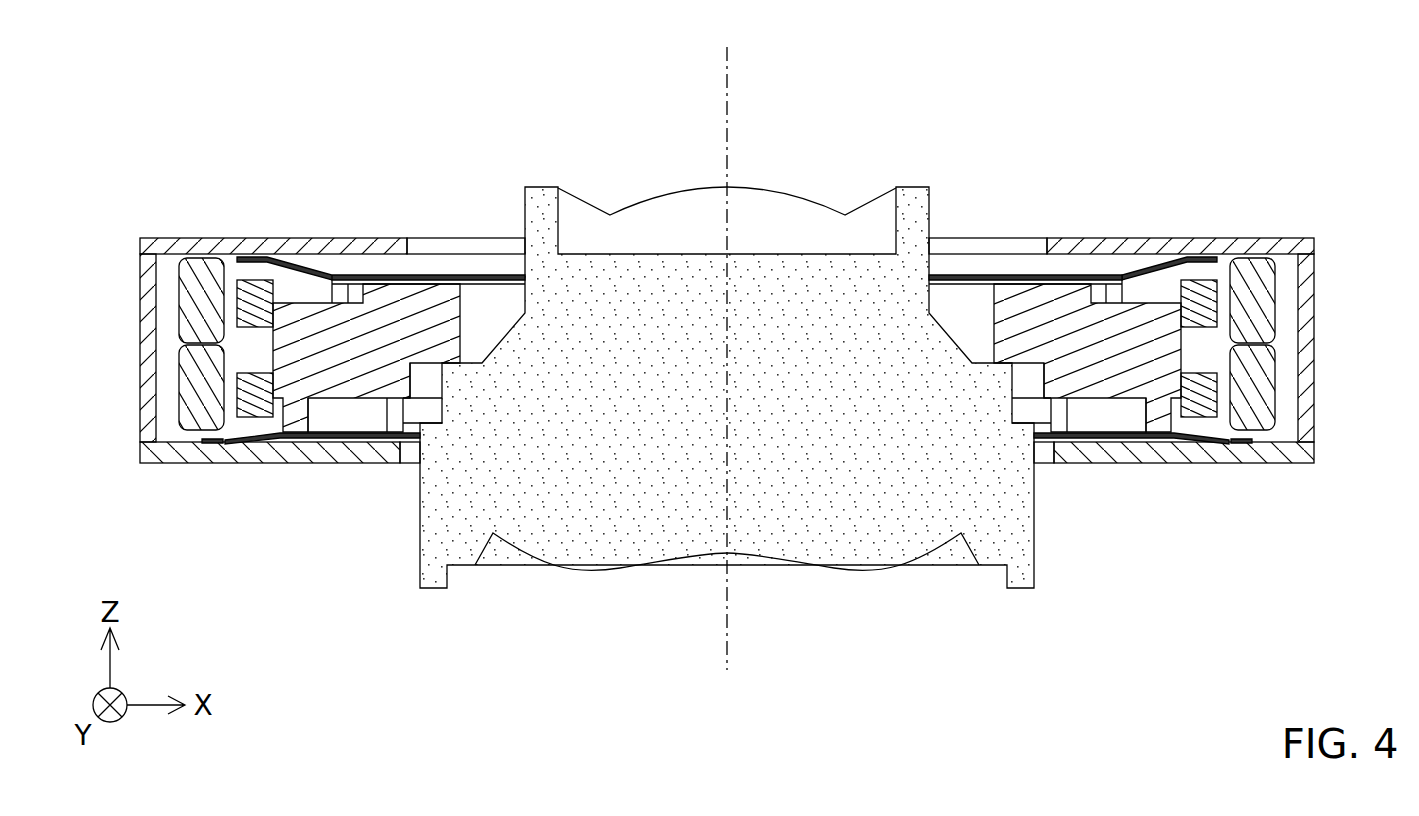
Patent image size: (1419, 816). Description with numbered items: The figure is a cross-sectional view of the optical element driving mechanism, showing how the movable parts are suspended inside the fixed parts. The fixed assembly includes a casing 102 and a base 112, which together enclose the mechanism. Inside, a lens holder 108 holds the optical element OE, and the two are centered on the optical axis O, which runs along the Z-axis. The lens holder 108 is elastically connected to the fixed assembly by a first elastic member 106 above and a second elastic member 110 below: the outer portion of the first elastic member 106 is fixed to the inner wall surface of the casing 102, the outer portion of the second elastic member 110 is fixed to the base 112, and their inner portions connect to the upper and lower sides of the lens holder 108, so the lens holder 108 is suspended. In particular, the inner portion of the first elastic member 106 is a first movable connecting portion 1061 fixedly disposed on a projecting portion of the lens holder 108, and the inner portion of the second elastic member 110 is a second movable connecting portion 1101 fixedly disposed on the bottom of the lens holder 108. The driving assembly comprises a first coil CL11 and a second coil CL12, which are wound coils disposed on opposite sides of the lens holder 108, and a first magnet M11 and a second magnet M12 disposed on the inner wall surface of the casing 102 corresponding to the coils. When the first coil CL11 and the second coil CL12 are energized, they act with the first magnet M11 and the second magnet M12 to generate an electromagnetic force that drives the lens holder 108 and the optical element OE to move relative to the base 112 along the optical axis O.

The casing 102 is at (232, 252).
The lens holder 108 is at (358, 345).
The first elastic member 106 is at (1105, 277).
The first movable connecting portion 1061 is at (1015, 276).
The second elastic member 110 is at (1237, 444).
The second movable connecting portion 1101 is at (1073, 437).
The base 112 is at (348, 455).
The first coil CL11 is at (1200, 397).
The second coil CL12 is at (258, 410).
The first magnet M11 is at (1255, 385).
The second magnet M12 is at (205, 300).
The optical element OE is at (640, 305).
The optical axis O is at (727, 343).